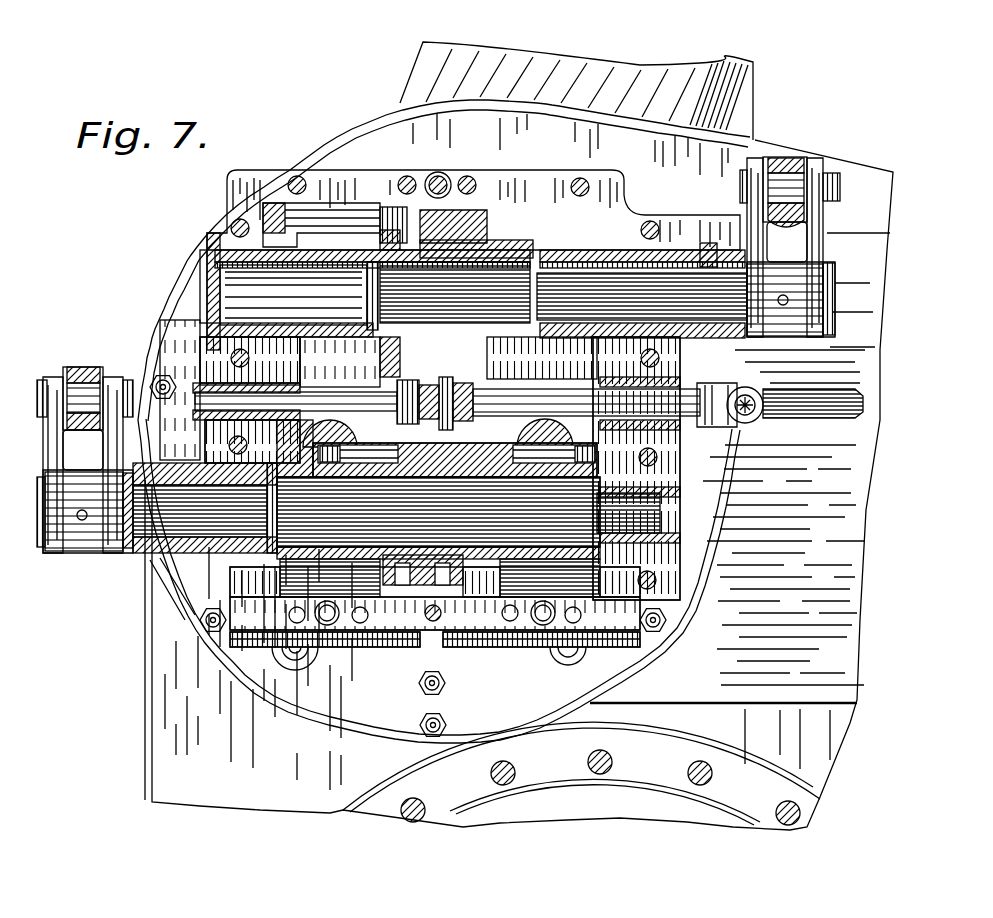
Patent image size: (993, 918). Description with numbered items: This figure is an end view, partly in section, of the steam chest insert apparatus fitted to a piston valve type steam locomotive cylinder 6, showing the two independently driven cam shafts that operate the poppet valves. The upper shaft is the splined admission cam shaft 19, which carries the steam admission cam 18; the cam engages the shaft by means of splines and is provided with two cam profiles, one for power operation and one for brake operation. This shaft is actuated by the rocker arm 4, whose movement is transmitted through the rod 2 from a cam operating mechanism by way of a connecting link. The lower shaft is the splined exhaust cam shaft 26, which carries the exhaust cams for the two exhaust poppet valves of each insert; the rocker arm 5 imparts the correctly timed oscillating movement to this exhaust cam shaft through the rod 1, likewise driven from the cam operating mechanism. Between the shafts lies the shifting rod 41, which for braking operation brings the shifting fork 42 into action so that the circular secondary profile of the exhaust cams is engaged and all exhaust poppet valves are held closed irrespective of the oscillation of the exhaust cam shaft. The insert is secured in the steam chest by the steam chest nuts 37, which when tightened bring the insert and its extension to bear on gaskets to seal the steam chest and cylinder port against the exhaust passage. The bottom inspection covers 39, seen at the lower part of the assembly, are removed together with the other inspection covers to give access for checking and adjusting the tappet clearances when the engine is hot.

The rod 1 is at (83, 372).
The rod 2 is at (788, 158).
The rocker arm 4 is at (817, 253).
The rocker arm 5 is at (53, 548).
The steam locomotive cylinder 6 is at (165, 680).
The steam admission cam 18 is at (525, 257).
The splined cam shaft 19 is at (247, 287).
The cam shaft 26 is at (157, 510).
The steam chest nuts 37 is at (438, 672).
The bottom inspection covers 39 is at (368, 648).
The shifting rod 41 is at (723, 427).
The shifting fork 42 is at (428, 373).